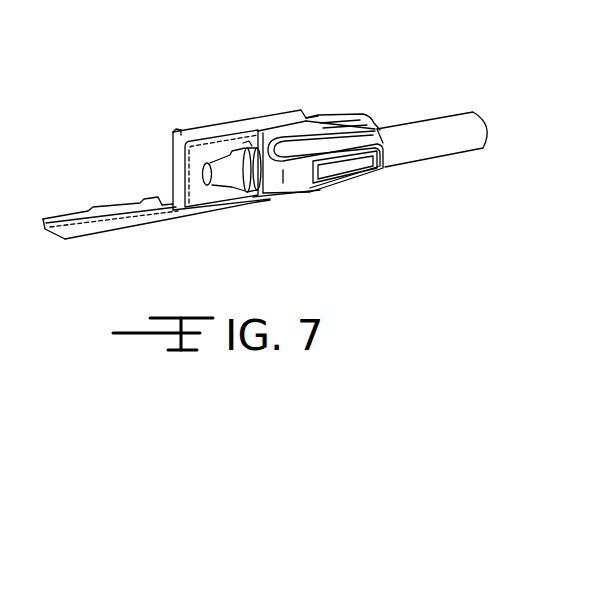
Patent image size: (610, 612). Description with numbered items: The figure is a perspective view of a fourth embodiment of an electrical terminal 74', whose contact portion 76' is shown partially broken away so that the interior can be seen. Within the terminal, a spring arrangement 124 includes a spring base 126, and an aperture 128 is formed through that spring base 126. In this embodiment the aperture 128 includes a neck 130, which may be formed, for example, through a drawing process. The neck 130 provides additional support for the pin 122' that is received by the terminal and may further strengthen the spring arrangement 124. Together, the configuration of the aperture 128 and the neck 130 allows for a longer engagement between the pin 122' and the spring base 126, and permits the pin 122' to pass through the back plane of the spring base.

The electrical terminal 74' is at (156, 138).
The contact portion 76' is at (245, 119).
The pin 122' is at (471, 105).
The spring arrangement 124 is at (348, 107).
The spring base 126 is at (268, 205).
The aperture 128 is at (247, 193).
The neck 130 is at (251, 190).